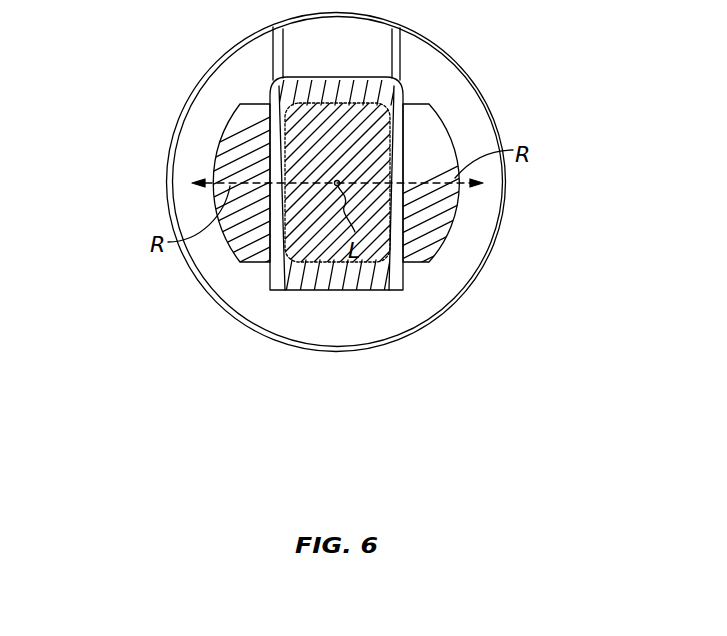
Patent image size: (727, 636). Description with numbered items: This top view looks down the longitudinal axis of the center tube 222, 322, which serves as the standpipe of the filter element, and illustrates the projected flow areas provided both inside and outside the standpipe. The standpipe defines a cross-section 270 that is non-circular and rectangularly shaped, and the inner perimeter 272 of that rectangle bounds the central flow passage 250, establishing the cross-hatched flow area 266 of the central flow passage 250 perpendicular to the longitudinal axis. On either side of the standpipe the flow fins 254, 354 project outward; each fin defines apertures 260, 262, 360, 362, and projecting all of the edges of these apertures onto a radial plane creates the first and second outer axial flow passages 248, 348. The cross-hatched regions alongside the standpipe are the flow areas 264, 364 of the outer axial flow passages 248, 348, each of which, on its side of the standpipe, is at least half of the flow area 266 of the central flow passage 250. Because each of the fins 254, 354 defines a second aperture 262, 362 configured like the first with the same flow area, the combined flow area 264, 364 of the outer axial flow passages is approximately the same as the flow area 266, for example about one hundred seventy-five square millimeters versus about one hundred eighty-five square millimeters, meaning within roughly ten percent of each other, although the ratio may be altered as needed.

The center tube 222 is at (401, 182).
The center tube 322 is at (502, 123).
The flow fin 254 is at (406, 182).
The flow fin 354 is at (506, 194).
The cross-section 270 is at (316, 291).
The inner perimeter 272 is at (333, 103).
The flow area 266 is at (353, 165).
The central flow passage 250 is at (370, 128).
The flow area 264 is at (345, 233).
The flow area 364 is at (345, 233).
The first outer axial flow passage 248 is at (345, 233).
The second outer axial flow passage 348 is at (345, 233).
The aperture 260 is at (345, 233).
The second aperture 262 is at (345, 233).
The aperture 360 is at (345, 233).
The second aperture 362 is at (253, 245).